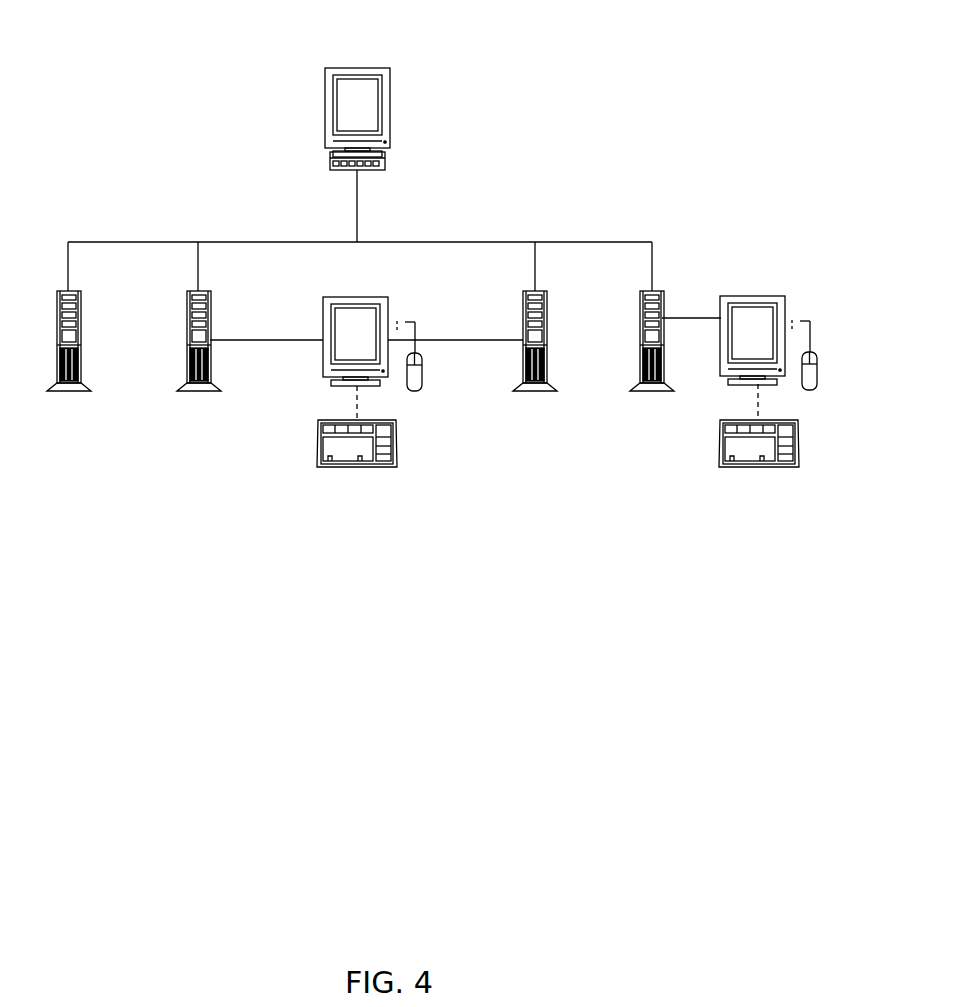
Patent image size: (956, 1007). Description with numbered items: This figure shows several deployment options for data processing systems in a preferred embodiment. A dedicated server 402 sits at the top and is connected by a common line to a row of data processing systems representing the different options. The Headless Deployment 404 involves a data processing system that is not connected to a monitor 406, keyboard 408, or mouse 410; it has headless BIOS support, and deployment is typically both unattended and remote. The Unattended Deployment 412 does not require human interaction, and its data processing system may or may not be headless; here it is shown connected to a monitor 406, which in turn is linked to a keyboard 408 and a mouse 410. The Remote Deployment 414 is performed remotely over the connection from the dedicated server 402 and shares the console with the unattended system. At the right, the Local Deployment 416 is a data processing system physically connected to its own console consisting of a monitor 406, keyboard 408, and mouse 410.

The dedicated server 402 is at (366, 90).
The headless deployment 404 is at (76, 378).
The monitor 406 is at (560, 312).
The keyboard 408 is at (553, 472).
The mouse 410 is at (621, 382).
The unattended deployment 412 is at (220, 378).
The remote deployment 414 is at (553, 374).
The local deployment 416 is at (727, 429).